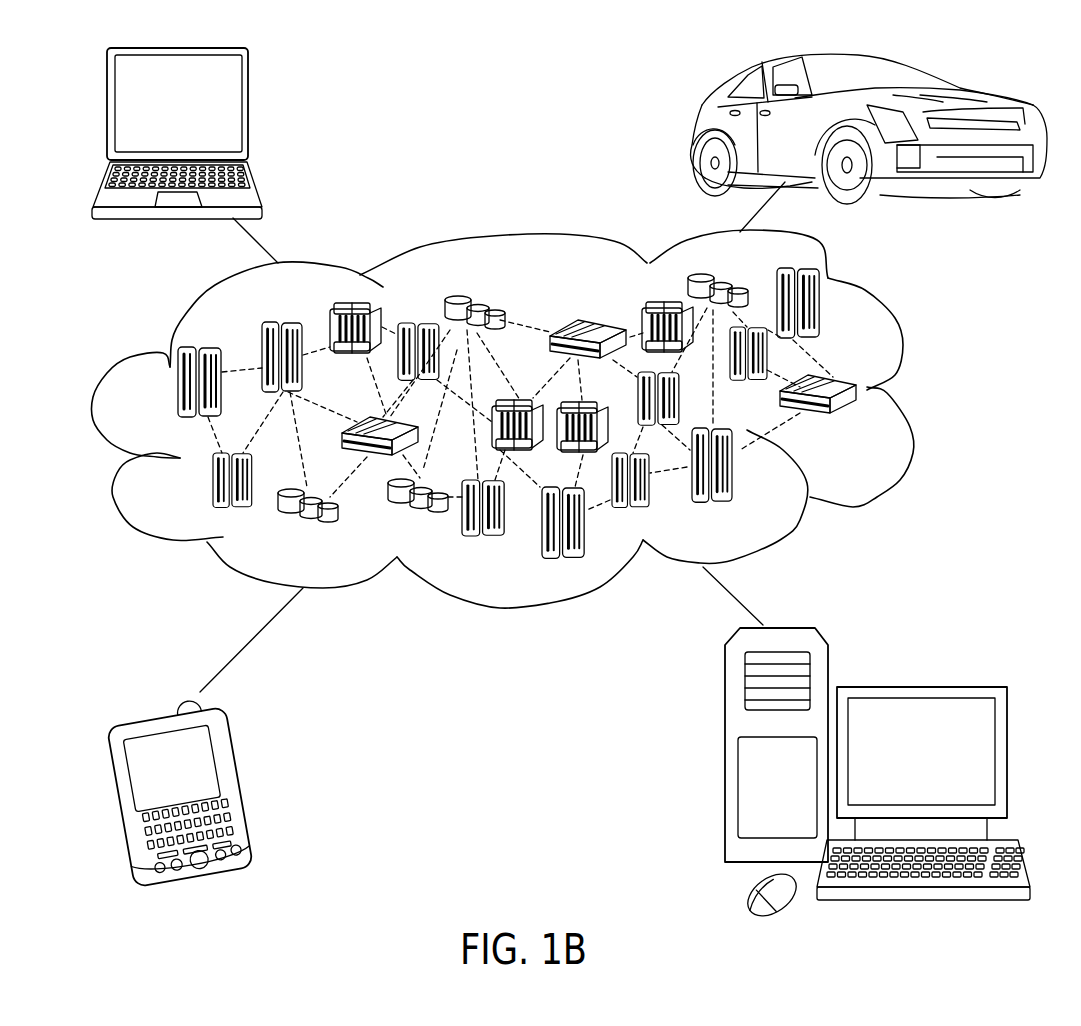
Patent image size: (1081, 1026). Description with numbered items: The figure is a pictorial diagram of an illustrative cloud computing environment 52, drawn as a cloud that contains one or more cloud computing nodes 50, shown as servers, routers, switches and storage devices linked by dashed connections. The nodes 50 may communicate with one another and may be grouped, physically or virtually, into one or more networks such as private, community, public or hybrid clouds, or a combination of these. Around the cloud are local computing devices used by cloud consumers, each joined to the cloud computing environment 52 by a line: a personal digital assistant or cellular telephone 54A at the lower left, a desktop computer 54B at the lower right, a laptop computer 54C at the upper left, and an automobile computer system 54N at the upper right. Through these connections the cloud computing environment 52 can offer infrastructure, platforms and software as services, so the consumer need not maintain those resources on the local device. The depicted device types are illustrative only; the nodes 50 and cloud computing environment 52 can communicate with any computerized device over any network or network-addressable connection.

The cloud computing nodes 50 is at (921, 297).
The cloud computing environment 52 is at (914, 393).
The personal digital assistant (PDA) or cellular telephone 54A is at (237, 786).
The desktop computer 54B is at (918, 687).
The laptop computer 54C is at (248, 116).
The automobile computer system 54N is at (698, 131).